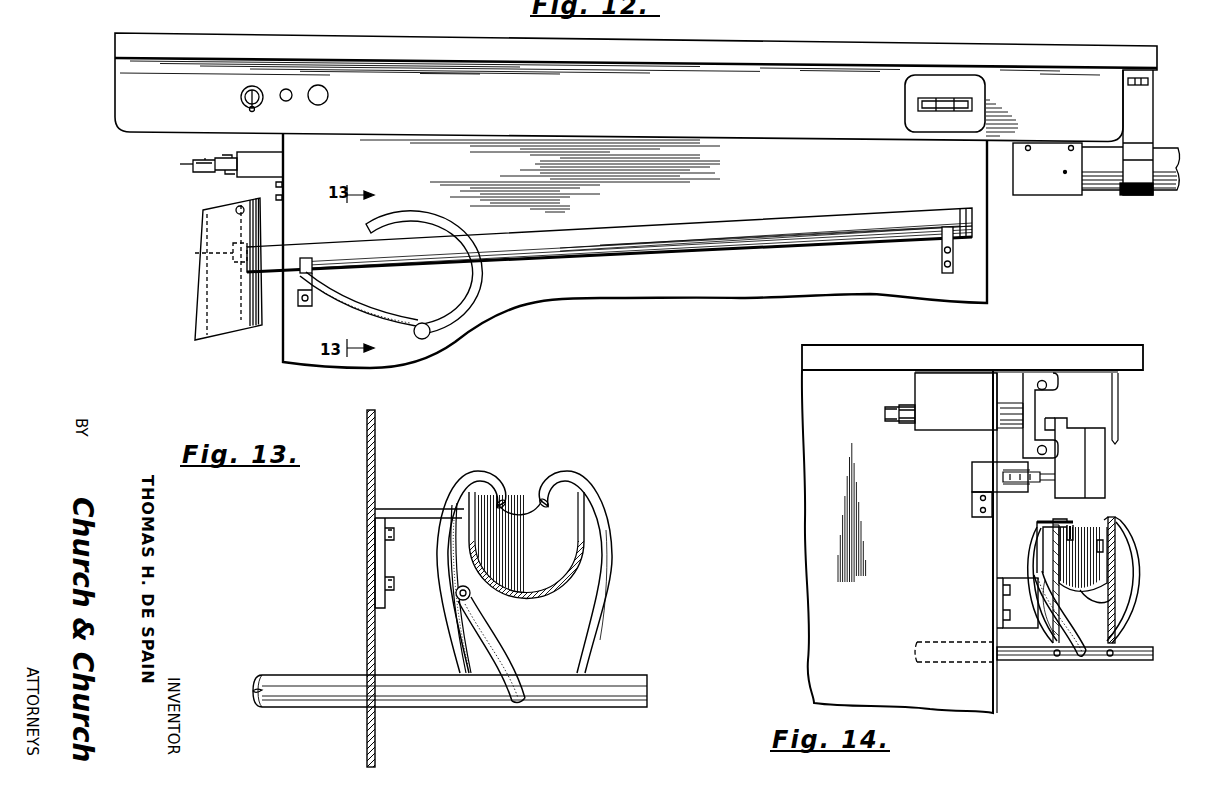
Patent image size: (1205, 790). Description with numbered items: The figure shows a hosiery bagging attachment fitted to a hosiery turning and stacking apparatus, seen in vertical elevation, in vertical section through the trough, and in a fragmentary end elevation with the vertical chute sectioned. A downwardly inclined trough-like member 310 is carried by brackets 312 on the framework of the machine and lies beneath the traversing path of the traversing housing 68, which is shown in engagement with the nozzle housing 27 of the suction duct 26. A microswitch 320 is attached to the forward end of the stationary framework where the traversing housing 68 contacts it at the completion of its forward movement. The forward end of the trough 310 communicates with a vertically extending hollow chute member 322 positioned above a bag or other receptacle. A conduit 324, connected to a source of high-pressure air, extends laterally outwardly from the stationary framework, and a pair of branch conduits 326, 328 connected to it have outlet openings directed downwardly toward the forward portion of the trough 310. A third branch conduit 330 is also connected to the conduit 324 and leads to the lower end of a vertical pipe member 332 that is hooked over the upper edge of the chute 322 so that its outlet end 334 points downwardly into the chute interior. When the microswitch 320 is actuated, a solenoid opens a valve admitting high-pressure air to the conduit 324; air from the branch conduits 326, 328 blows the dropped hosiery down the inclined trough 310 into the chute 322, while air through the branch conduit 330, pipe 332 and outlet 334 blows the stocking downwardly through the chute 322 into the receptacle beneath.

In FIG. 12, the suction duct 26 is at (1169, 194).
In FIG. 12, the nozzle housing 27 is at (1092, 192).
In FIG. 12, the traversing housing 68 is at (1032, 198).
In FIG. 14, the traversing housing 68 is at (1106, 474).
In FIG. 12, the trough-like member 310 is at (732, 246).
In FIG. 13, the trough-like member 310 is at (536, 554).
In FIG. 14, the trough-like member 310 is at (1085, 565).
In FIG. 12, the brackets 312 is at (315, 274).
In FIG. 12, the microswitch 320 is at (239, 173).
In FIG. 14, the microswitch 320 is at (972, 478).
In FIG. 12, the hollow chute member 322 is at (198, 300).
In FIG. 14, the hollow chute member 322 is at (1116, 521).
In FIG. 12, the conduit 324 is at (424, 336).
In FIG. 13, the conduit 324 is at (553, 709).
In FIG. 14, the conduit 324 is at (1145, 662).
In FIG. 13, the branch conduit 326 is at (445, 560).
In FIG. 14, the branch conduit 326 is at (1039, 608).
In FIG. 12, the branch conduit 328 is at (472, 279).
In FIG. 13, the branch conduit 328 is at (612, 578).
In FIG. 14, the branch conduit 328 is at (1121, 630).
In FIG. 12, the third branch conduit 330 is at (348, 308).
In FIG. 13, the third branch conduit 330 is at (516, 646).
In FIG. 14, the third branch conduit 330 is at (1030, 602).
In FIG. 12, the vertical pipe member 332 is at (195, 254).
In FIG. 14, the vertical pipe member 332 is at (1040, 546).
In FIG. 14, the outlet end 334 is at (1090, 515).